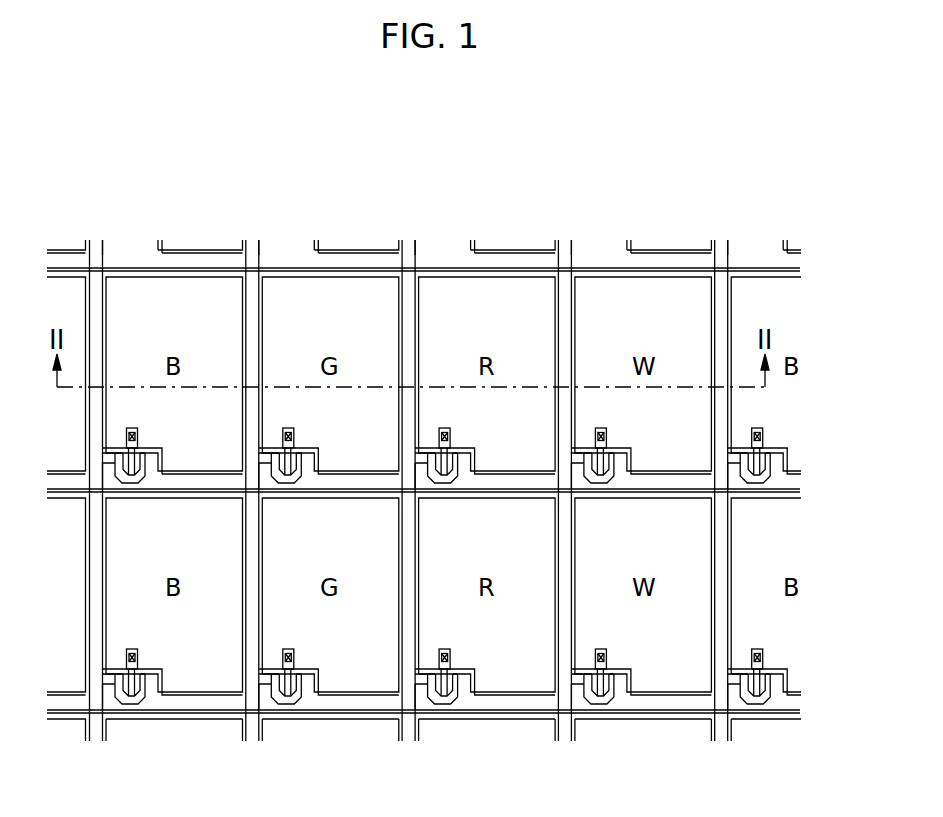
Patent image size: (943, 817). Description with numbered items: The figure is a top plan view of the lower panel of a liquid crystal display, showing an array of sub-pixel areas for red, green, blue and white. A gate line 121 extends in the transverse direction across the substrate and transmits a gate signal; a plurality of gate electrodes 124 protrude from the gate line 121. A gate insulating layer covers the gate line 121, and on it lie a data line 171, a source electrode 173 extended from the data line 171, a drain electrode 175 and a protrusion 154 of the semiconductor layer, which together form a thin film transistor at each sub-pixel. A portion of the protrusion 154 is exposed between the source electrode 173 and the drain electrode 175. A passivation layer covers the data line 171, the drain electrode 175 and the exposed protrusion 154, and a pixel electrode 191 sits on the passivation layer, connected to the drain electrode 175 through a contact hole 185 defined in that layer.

The gate line 121 is at (192, 494).
The gate electrode 124 is at (162, 486).
The protrusion of the semiconductor layer 154 is at (153, 450).
The data line 171 is at (90, 326).
The source electrode 173 is at (131, 484).
The drain electrode 175 is at (141, 441).
The contact hole 185 is at (131, 428).
The pixel electrode 191 is at (107, 291).